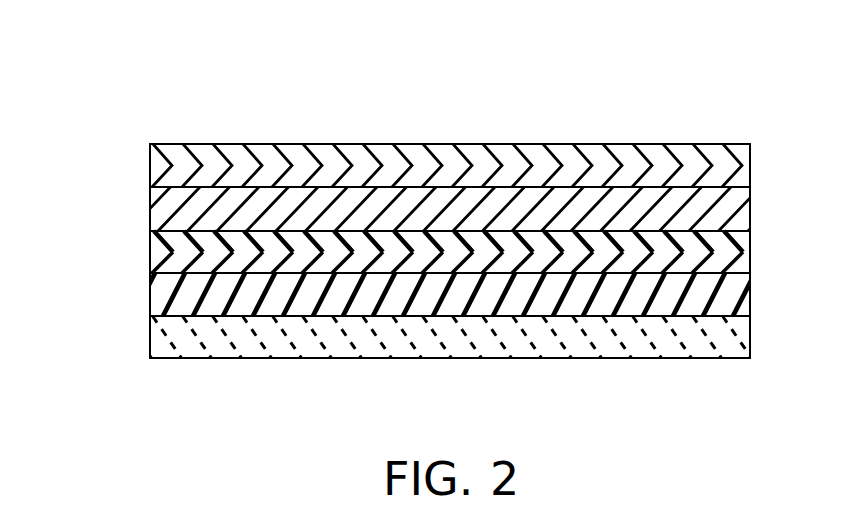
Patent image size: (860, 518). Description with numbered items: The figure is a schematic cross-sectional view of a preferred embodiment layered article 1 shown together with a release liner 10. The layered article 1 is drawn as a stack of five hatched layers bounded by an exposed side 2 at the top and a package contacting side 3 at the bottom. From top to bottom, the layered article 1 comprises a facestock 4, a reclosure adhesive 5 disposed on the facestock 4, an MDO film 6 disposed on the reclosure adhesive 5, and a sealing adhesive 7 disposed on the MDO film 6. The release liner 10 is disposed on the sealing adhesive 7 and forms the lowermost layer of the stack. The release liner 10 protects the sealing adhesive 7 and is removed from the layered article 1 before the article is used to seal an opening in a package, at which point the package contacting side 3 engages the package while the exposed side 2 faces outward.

The layered article 1 is at (63, 92).
The exposed side 2 is at (407, 140).
The package contacting side 3 is at (477, 318).
The facestock 4 is at (733, 171).
The reclosure adhesive 5 is at (733, 214).
The MDO film 6 is at (733, 259).
The sealing adhesive 7 is at (733, 298).
The release liner 10 is at (740, 333).